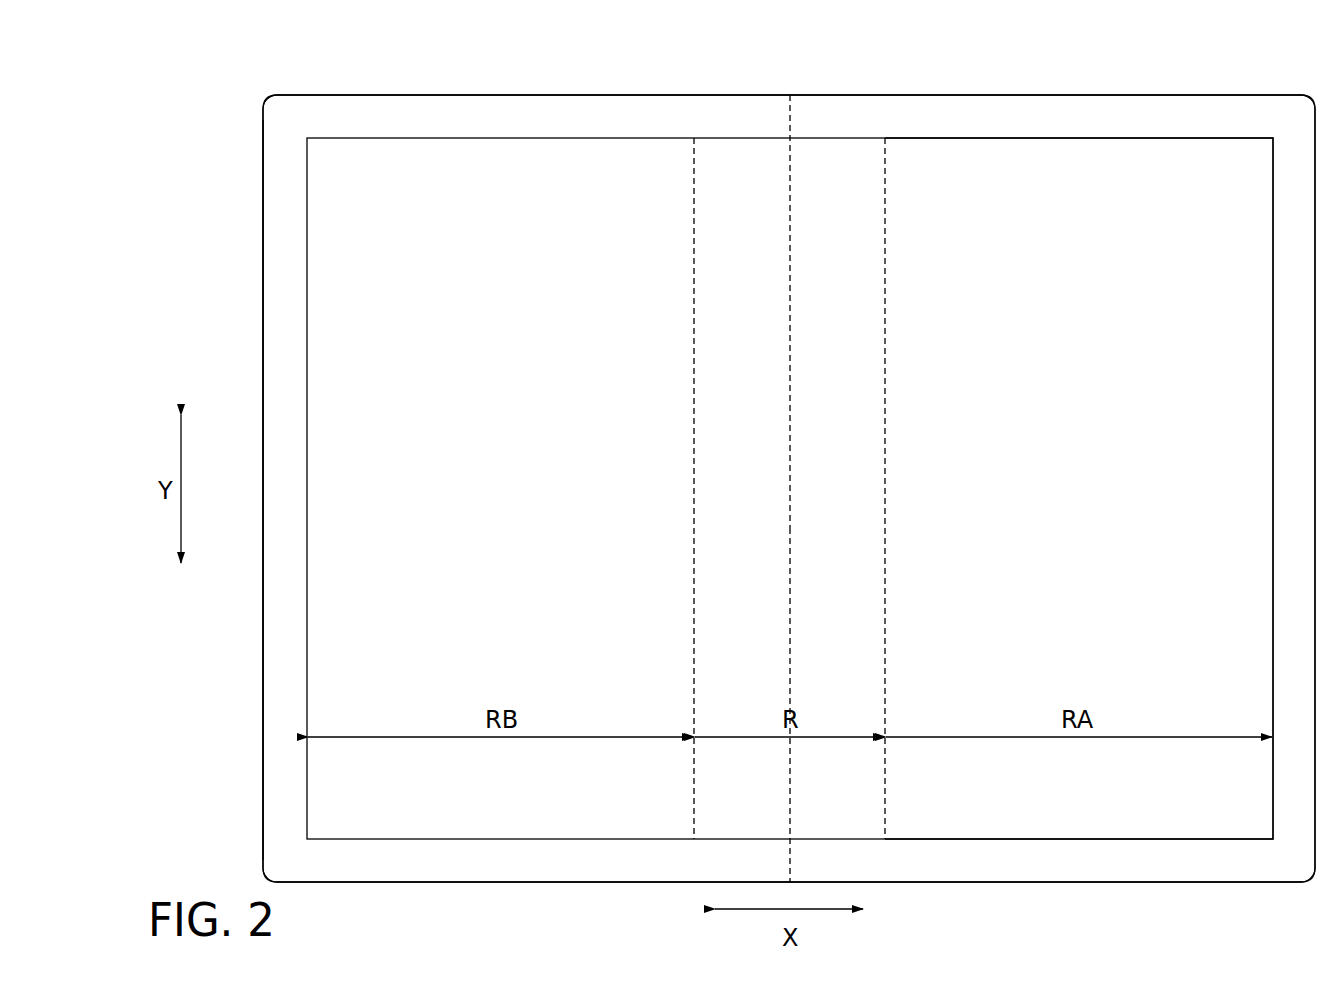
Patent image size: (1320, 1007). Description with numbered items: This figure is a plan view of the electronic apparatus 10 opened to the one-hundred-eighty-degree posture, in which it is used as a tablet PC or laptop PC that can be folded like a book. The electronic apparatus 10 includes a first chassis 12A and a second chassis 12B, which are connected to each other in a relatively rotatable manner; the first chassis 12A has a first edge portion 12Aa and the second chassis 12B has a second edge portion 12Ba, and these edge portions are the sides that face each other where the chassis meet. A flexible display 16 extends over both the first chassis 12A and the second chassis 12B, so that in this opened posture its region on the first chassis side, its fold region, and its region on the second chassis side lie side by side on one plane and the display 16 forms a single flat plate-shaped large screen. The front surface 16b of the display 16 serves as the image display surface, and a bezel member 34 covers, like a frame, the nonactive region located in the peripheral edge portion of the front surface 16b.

The electronic apparatus 10 is at (206, 63).
The first chassis 12A is at (1154, 60).
The second chassis 12B is at (482, 60).
The first edge portion 12Aa is at (790, 557).
The second edge portion 12Ba is at (790, 528).
The display 16 is at (525, 168).
The front surface 16b is at (1181, 163).
The bezel member 34 is at (285, 231).